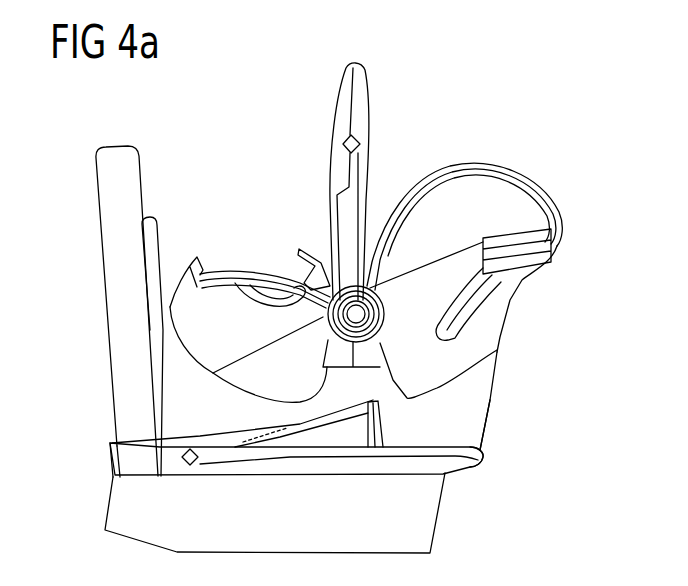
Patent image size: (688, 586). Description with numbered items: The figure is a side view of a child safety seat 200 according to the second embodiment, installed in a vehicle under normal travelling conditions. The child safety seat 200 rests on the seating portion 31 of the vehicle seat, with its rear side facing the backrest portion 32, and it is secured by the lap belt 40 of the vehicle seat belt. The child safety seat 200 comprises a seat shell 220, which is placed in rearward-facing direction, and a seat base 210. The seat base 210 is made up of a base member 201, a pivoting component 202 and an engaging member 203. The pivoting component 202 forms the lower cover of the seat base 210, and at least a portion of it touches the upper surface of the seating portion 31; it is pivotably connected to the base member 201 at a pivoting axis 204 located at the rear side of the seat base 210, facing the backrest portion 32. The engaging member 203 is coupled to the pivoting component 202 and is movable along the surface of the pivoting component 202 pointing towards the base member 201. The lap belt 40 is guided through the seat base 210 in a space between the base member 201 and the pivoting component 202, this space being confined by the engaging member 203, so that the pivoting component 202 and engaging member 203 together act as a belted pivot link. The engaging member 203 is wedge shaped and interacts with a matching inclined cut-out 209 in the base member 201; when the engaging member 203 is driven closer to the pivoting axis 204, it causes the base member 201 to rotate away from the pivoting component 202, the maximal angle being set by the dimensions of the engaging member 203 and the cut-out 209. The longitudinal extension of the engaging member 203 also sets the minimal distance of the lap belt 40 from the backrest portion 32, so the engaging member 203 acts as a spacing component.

The child safety seat 200 is at (530, 150).
The seat shell 220 is at (272, 190).
The base member 201 is at (497, 370).
The pivoting component 202 is at (458, 453).
The engaging member 203 is at (375, 401).
The pivoting axis 204 is at (193, 463).
The cut-out 209 is at (337, 403).
The seat base 210 is at (512, 418).
The seating portion 31 is at (426, 520).
The backrest portion 32 is at (80, 270).
The lap belt 40 is at (140, 455).